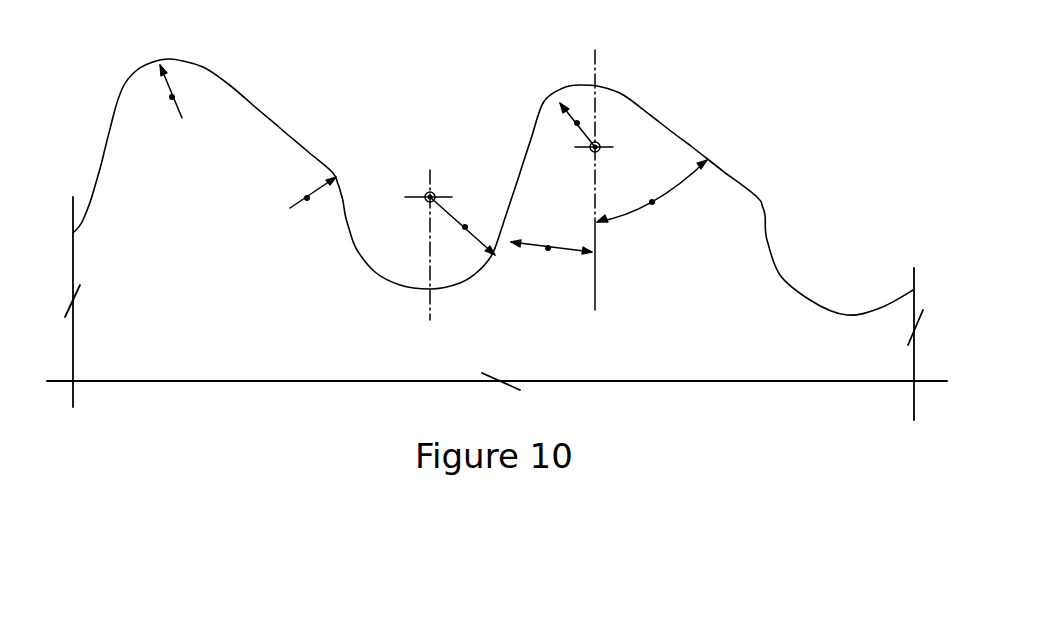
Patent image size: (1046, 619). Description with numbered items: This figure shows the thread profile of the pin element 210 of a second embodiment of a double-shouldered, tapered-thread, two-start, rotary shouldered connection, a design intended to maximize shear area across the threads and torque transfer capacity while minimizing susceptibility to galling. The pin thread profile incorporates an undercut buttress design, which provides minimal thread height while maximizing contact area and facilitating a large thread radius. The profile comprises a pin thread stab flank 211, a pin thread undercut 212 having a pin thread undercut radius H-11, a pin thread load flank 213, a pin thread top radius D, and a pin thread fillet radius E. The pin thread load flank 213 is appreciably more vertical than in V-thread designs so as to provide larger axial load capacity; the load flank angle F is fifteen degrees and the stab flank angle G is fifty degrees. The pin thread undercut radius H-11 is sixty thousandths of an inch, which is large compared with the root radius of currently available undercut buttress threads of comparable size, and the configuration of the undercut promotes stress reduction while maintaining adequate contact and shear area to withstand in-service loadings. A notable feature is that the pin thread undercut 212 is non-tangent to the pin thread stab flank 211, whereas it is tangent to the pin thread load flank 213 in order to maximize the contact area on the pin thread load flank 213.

The pin element 210 is at (188, 345).
The pin thread stab flank 211 is at (266, 115).
The pin thread undercut 212 is at (385, 272).
The pin thread load flank 213 is at (523, 175).
The pin thread top radius D is at (172, 97).
The pin thread fillet radius E is at (307, 198).
The load flank angle F is at (548, 248).
The stab flank angle G is at (652, 202).
The pin thread undercut radius H-11 is at (465, 227).